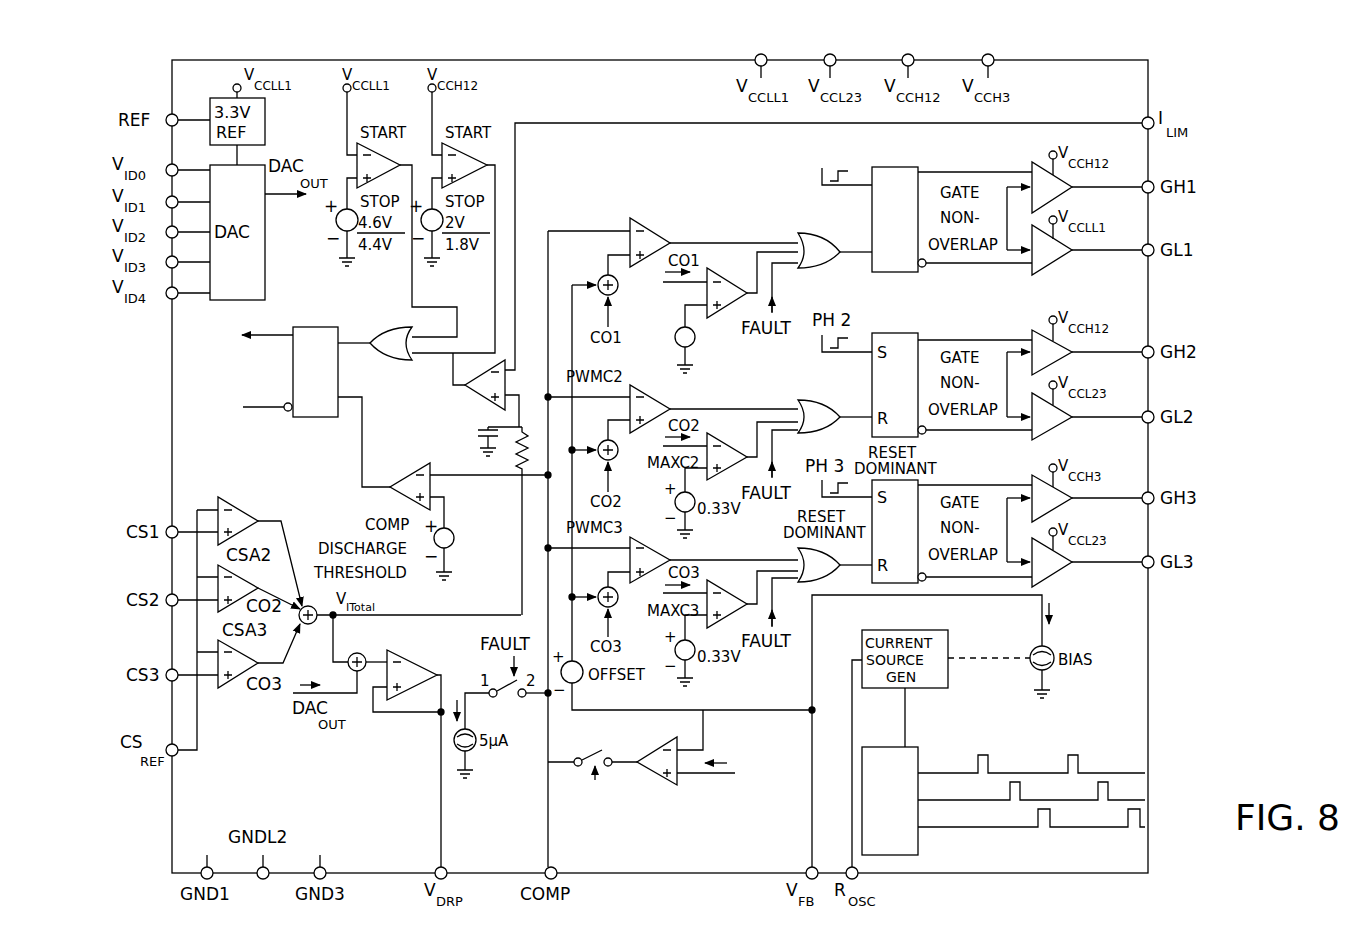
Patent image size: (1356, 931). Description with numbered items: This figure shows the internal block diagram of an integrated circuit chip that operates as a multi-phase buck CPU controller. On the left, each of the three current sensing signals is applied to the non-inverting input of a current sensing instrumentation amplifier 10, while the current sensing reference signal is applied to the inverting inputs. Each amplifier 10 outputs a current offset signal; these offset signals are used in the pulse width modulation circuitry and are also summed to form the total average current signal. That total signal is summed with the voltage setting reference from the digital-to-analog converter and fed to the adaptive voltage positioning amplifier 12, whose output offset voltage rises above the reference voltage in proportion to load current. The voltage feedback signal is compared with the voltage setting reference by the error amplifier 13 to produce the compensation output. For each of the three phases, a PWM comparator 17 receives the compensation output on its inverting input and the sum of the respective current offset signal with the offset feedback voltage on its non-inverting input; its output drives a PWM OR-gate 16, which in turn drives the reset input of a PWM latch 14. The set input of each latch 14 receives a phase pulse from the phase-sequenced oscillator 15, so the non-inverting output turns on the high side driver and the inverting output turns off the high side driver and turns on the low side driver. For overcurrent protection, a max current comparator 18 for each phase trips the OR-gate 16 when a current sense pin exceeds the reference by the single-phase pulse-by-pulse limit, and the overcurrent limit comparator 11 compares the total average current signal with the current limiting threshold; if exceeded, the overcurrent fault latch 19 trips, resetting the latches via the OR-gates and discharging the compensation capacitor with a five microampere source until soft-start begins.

The current sensing instrumentation amplifier 10 is at (233, 497).
The overcurrent limit comparator 11 is at (480, 400).
The adaptive voltage positioning amplifier 12 is at (397, 652).
The error amplifier 13 is at (655, 774).
The PWM latch 14 is at (900, 167).
The phase-sequenced oscillator 15 is at (905, 747).
The PWM OR-gate 16 is at (815, 233).
The PWM comparator 17 is at (640, 218).
The max current comparator 18 is at (712, 268).
The overcurrent fault latch 19 is at (300, 327).